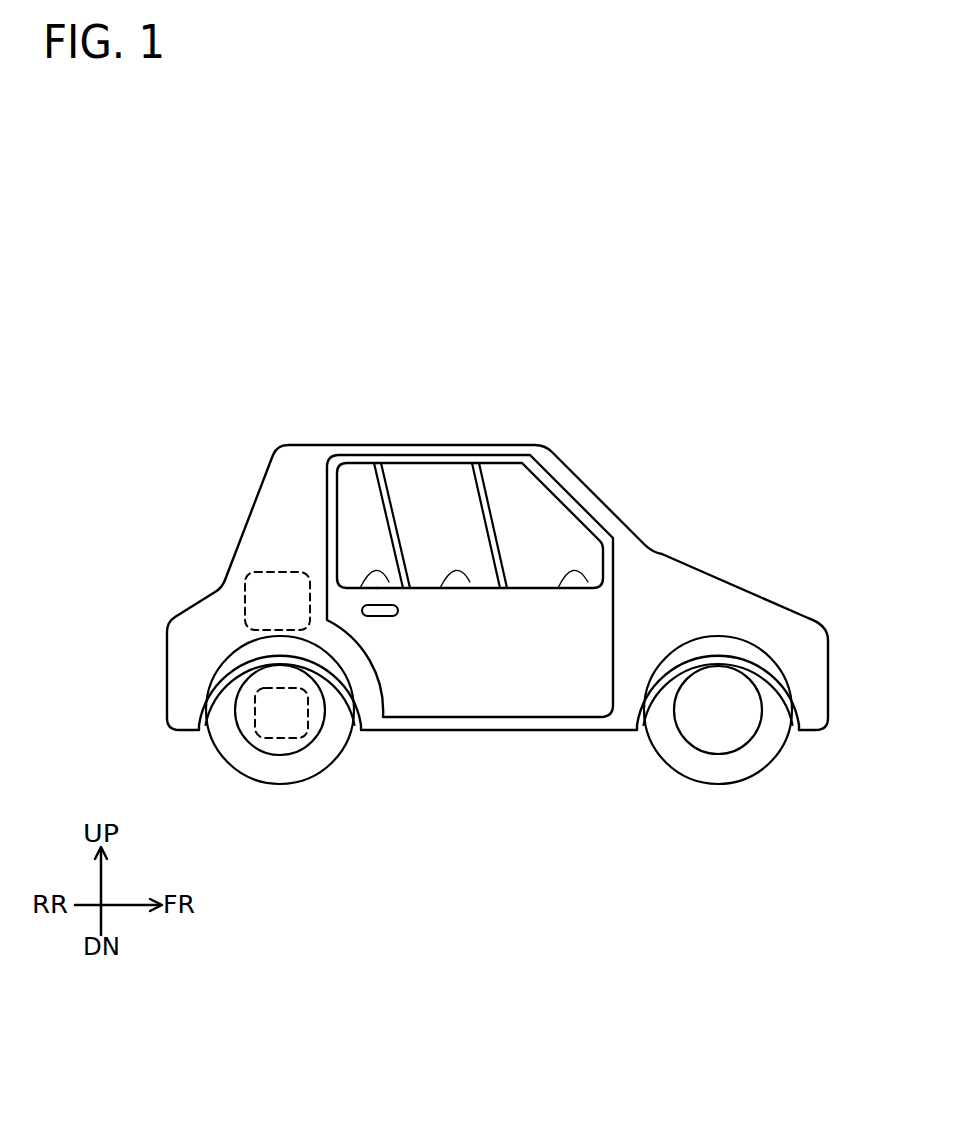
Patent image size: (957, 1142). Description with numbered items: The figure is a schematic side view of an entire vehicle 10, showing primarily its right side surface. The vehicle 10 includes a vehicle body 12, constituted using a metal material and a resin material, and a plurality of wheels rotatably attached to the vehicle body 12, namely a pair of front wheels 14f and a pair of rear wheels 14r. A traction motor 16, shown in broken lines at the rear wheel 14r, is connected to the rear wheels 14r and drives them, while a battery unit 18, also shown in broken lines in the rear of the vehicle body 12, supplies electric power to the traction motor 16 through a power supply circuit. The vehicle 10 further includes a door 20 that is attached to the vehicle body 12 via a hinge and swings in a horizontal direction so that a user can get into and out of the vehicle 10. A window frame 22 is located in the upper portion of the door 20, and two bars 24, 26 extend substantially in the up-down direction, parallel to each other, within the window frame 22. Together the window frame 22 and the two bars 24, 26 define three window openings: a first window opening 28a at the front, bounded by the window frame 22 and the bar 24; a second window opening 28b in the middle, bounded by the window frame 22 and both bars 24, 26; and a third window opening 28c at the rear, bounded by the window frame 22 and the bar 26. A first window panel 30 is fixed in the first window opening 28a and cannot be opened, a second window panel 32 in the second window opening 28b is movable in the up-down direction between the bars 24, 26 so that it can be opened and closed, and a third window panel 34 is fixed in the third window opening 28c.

The vehicle 10 is at (764, 401).
The vehicle body 12 is at (287, 460).
The rear wheel 14r is at (220, 703).
The front wheel 14f is at (777, 713).
The traction motor 16 is at (265, 690).
The battery unit 18 is at (268, 570).
The door 20 is at (513, 690).
The window frame 22 is at (333, 460).
The bar 24 is at (489, 496).
The bar 26 is at (388, 510).
The first window opening 28a is at (588, 582).
The second window opening 28b is at (470, 582).
The third window opening 28c is at (389, 582).
The first window panel 30 is at (563, 530).
The second window panel 32 is at (442, 477).
The third window panel 34 is at (353, 477).